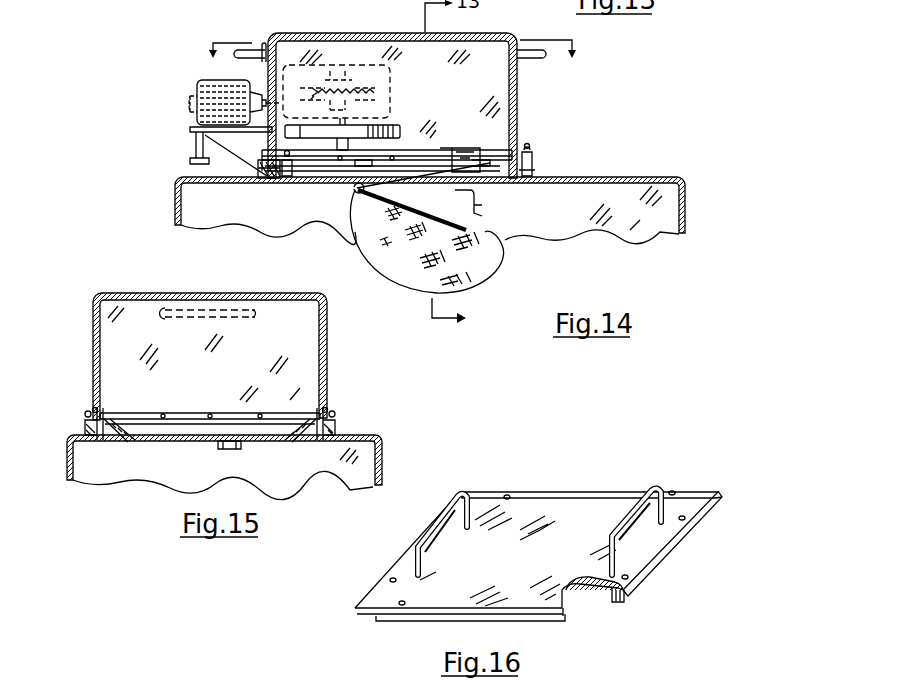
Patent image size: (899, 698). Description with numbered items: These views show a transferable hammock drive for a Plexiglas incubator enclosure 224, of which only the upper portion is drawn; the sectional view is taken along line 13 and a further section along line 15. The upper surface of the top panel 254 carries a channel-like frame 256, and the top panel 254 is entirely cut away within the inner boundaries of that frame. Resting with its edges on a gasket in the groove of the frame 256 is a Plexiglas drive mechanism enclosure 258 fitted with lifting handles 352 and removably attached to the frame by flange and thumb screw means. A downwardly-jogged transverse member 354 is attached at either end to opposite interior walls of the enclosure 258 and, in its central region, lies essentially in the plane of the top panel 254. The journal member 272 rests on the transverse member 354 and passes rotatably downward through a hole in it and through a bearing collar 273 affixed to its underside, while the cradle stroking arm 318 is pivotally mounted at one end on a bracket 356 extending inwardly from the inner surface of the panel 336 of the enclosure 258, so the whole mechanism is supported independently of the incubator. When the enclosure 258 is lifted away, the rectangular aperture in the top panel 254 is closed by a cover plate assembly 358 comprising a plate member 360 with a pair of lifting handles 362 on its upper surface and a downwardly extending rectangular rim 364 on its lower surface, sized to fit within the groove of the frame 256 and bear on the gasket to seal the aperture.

In FIG. 14, the section line 13- 13 is at (397, 59).
In FIG. 14, the section line 15- 15 is at (463, 313).
In FIG. 14, the incubator enclosure 224 is at (170, 217).
In FIG. 15, the incubator enclosure 224 is at (60, 461).
In FIG. 14, the top panel 254 is at (622, 173).
In FIG. 15, the top panel 254 is at (368, 433).
In FIG. 14, the channel-like frame 256 is at (533, 164).
In FIG. 15, the channel-like frame 256 is at (338, 426).
In FIG. 14, the drive mechanism enclosure 258 is at (523, 114).
In FIG. 15, the drive mechanism enclosure 258 is at (90, 345).
In FIG. 14, the journal member 272 is at (478, 224).
In FIG. 15, the bearing collar 273 is at (214, 448).
In FIG. 14, the cradle stroking arm 318 is at (430, 150).
In FIG. 14, the panel 336 is at (260, 52).
In FIG. 14, the lifting handles 352 is at (252, 50).
In FIG. 15, the lifting handles 352 is at (214, 320).
In FIG. 14, the transverse member 354 is at (498, 183).
In FIG. 15, the transverse member 354 is at (261, 441).
In FIG. 14, the bracket 356 is at (290, 180).
In FIG. 16, the cover plate assembly 358 is at (572, 480).
In FIG. 16, the plate member 360 is at (727, 489).
In FIG. 16, the lifting handles 362 is at (422, 555).
In FIG. 16, the rim 364 is at (628, 598).